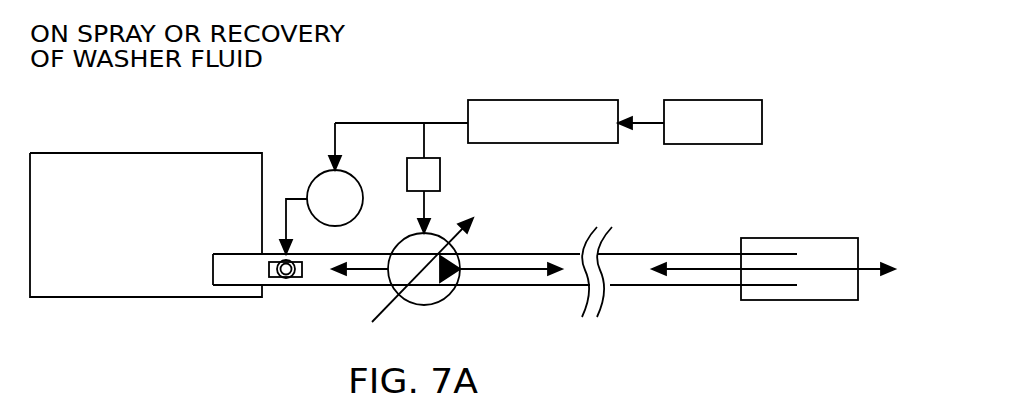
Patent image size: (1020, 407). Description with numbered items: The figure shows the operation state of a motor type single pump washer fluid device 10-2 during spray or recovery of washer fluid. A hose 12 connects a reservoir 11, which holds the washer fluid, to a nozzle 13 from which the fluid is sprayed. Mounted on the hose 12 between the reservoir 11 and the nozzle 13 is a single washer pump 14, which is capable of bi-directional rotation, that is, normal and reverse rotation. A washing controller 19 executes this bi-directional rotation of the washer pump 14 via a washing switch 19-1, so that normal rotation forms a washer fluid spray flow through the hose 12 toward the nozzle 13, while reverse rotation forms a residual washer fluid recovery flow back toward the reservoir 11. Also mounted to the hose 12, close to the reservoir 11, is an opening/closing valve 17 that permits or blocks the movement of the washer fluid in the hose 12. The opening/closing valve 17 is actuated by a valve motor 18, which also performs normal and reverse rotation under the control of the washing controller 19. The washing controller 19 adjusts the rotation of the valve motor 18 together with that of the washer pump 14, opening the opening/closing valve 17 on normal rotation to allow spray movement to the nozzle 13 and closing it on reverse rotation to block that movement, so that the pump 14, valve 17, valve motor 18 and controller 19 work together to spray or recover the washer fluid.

The motor type single pump washer fluid device 10-2 is at (759, 84).
The reservoir 11 is at (126, 153).
The hose 12 is at (668, 253).
The nozzle 13 is at (805, 238).
The washer pump 14 is at (450, 295).
The opening/closing valve 17 is at (286, 279).
The valve motor 18 is at (316, 179).
The washing controller 19 is at (545, 100).
The washing switch 19-1 is at (440, 175).